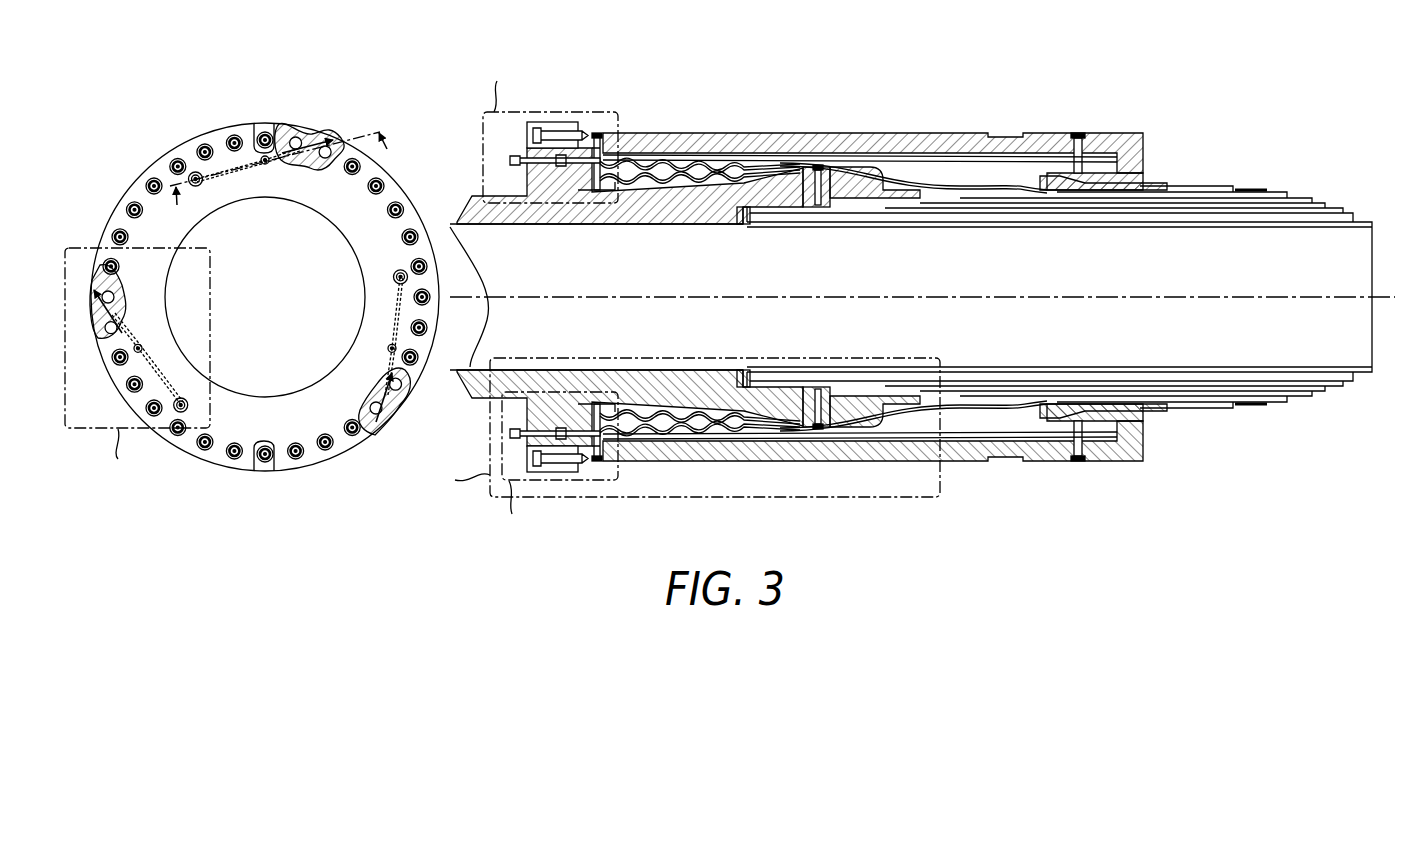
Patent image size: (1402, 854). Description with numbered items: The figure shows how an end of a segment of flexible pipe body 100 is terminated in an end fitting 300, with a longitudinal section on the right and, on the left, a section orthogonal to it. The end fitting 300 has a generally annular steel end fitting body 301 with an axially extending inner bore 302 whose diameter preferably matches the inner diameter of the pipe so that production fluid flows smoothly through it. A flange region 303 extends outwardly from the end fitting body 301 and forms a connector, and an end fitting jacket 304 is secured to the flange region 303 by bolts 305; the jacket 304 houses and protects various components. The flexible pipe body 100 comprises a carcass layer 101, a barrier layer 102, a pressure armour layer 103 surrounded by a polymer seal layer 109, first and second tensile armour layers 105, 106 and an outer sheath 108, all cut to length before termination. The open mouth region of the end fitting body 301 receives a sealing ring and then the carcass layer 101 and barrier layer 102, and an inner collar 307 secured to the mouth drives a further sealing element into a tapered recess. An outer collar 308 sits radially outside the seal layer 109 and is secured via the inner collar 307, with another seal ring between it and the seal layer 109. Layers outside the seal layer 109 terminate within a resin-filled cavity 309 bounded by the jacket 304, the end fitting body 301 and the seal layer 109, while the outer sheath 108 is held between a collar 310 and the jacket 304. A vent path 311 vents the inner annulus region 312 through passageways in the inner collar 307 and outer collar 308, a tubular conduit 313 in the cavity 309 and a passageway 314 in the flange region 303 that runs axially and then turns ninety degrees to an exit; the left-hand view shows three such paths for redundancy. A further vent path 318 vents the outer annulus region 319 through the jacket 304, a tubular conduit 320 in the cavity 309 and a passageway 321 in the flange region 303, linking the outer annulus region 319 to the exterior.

The flexible pipe body 100 is at (1059, 267).
The carcass layer 101 is at (1237, 227).
The barrier layer 102 is at (1313, 217).
The pressure armour layer 103 is at (1333, 207).
The first tensile armour layer 105 is at (900, 160).
The second tensile armour layer 106 is at (957, 173).
The outer sheath 108 is at (1150, 183).
The seal layer 109 is at (960, 212).
The end fitting 300 is at (886, 275).
The end fitting body 301 is at (728, 190).
The inner bore 302 is at (285, 308).
The flange region 303 is at (545, 178).
The end fitting jacket 304 is at (848, 143).
The bolts 305 is at (563, 133).
The inner collar 307 is at (818, 420).
The outer collar 308 is at (855, 422).
The cavity 309 is at (920, 430).
The collar 310 is at (1078, 150).
The vent path 311 is at (650, 425).
The inner annulus region 312 is at (1317, 396).
The tubular conduit 313 is at (702, 425).
The passageway 314 is at (575, 432).
The vent path 318 is at (1040, 150).
The outer annulus region 319 is at (1242, 190).
The tubular conduit 320 is at (660, 160).
The passageway 321 is at (530, 158).